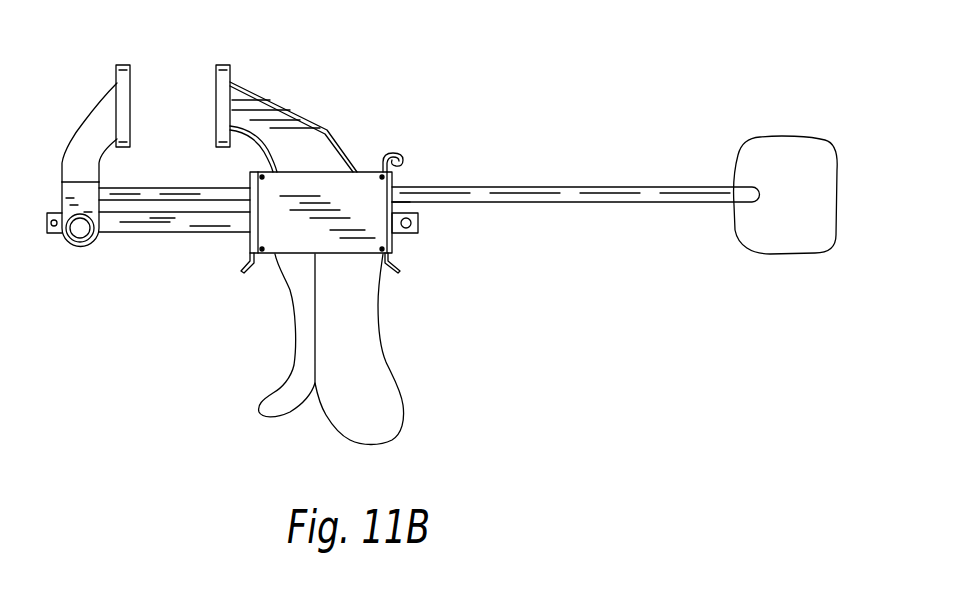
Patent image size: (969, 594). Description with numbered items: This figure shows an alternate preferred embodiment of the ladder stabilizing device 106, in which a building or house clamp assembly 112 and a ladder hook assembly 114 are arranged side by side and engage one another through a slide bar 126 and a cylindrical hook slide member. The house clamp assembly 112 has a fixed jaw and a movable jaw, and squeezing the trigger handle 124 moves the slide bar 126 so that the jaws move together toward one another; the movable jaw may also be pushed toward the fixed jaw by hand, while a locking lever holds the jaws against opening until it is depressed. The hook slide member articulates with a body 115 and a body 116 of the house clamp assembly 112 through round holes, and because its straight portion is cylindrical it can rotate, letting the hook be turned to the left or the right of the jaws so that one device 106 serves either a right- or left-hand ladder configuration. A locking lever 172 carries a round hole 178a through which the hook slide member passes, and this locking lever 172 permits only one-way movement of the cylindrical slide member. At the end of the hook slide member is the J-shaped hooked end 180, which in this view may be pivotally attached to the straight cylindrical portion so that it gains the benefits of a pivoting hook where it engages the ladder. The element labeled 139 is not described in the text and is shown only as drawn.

The ladder stabilizing device 106 is at (201, 368).
The house clamp assembly 112 is at (305, 122).
The ladder hook assembly 114 is at (167, 235).
The body 115 is at (90, 125).
The body 116 is at (358, 103).
The trigger handle 124 is at (258, 405).
The slide bar 126 is at (563, 185).
The housing release lever 139 is at (245, 270).
The locking lever 172 is at (402, 268).
The round hole 178a is at (403, 201).
The hooked end 180 is at (780, 237).